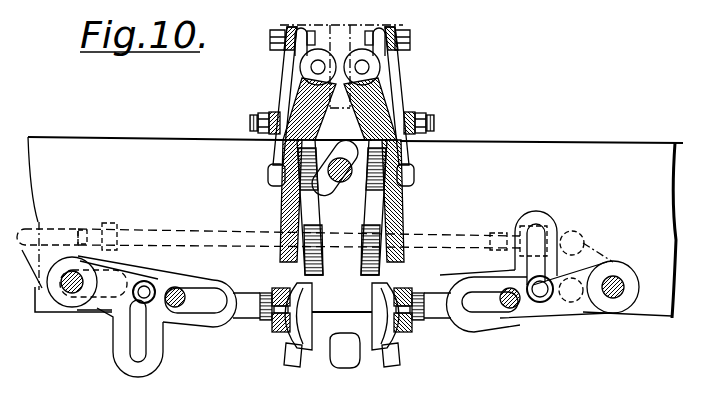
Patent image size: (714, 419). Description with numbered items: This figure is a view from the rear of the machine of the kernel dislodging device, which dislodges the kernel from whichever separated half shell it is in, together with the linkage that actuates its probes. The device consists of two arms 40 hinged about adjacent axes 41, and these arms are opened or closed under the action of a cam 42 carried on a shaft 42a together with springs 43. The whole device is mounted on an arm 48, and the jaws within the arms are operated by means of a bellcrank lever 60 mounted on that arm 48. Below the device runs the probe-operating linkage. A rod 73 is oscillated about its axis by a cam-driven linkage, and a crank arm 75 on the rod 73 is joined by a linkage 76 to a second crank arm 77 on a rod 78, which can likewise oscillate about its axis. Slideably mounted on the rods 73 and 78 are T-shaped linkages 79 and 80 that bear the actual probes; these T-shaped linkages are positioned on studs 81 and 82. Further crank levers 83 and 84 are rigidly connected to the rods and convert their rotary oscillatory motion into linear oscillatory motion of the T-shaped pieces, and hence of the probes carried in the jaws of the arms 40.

The arm 40 is at (311, 67).
The axis 41 is at (382, 55).
The cam 42 is at (328, 188).
The shaft 42a is at (380, 185).
The spring 43 is at (290, 103).
The arm 48 is at (479, 348).
The bellcrank lever 60 is at (342, 351).
The rod 73 is at (68, 288).
The crank arm 75 is at (45, 250).
The linkage 76 is at (203, 232).
The second crank arm 77 is at (596, 240).
The rod 78 is at (622, 270).
The T-shaped linkage 79 is at (134, 372).
The T-shaped linkage 80 is at (541, 215).
The stud 81 is at (176, 308).
The stud 82 is at (512, 310).
The crank lever 83 is at (102, 300).
The crank lever 84 is at (587, 303).